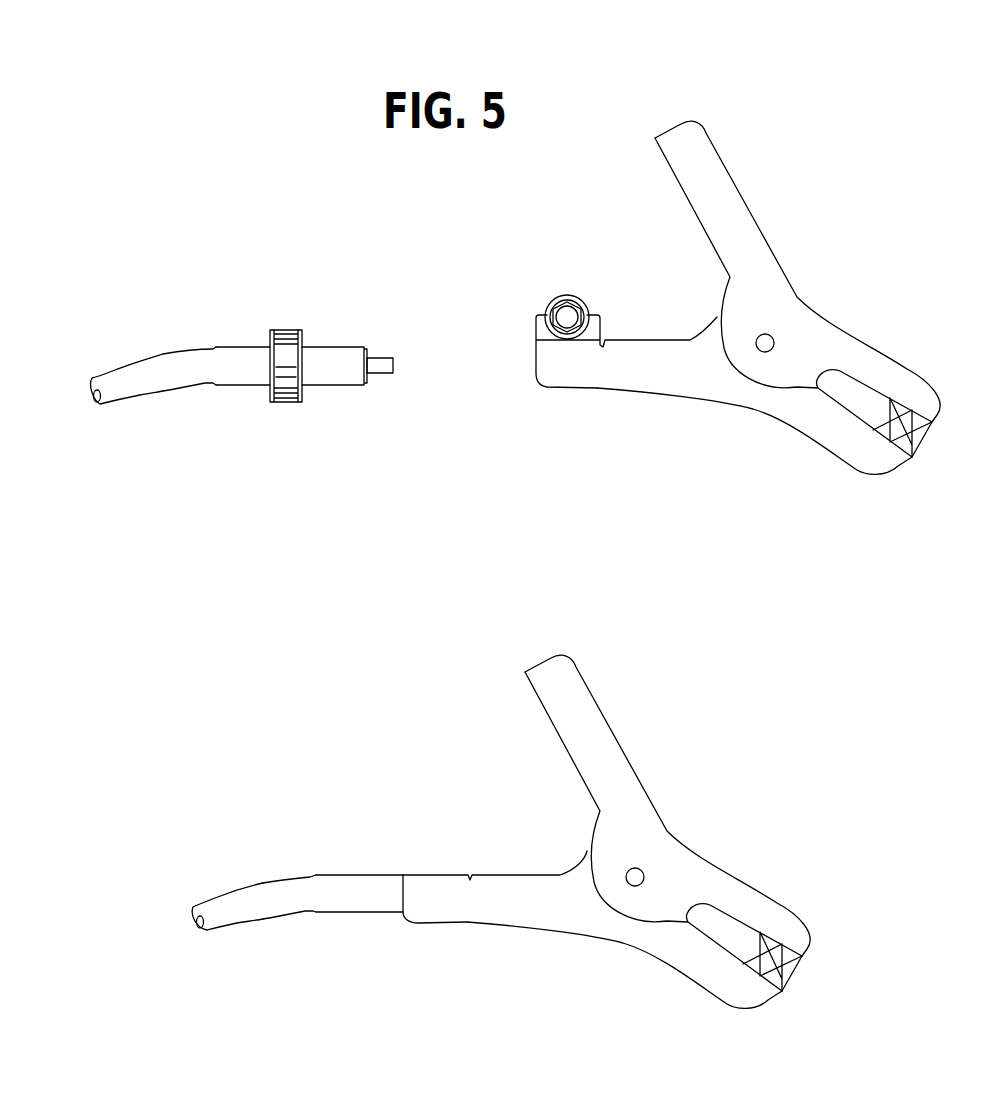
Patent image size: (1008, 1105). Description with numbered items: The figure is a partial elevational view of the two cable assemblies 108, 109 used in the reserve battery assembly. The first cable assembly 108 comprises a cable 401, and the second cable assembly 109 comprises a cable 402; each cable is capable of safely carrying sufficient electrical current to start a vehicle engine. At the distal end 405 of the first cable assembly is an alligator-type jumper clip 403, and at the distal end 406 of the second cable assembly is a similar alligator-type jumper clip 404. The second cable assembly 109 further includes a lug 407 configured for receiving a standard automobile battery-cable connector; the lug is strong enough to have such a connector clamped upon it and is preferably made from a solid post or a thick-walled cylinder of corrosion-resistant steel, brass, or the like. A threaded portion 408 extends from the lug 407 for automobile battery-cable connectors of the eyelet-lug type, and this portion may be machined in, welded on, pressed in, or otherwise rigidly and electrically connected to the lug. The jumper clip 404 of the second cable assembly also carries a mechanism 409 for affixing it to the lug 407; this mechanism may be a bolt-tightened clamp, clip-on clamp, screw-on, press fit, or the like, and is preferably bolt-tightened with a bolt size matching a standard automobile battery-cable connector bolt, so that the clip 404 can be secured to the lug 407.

The first cable assembly 108 is at (247, 903).
The second cable assembly 109 is at (135, 375).
The cable 401 is at (298, 893).
The cable 402 is at (180, 370).
The alligator-type jumper clip 403 is at (663, 847).
The alligator-type jumper clip 404 is at (793, 313).
The distal end 405 is at (375, 893).
The distal end 406 is at (258, 367).
The lug 407 is at (332, 363).
The threaded portion 408 is at (383, 360).
The mechanism for affixing 409 is at (575, 367).